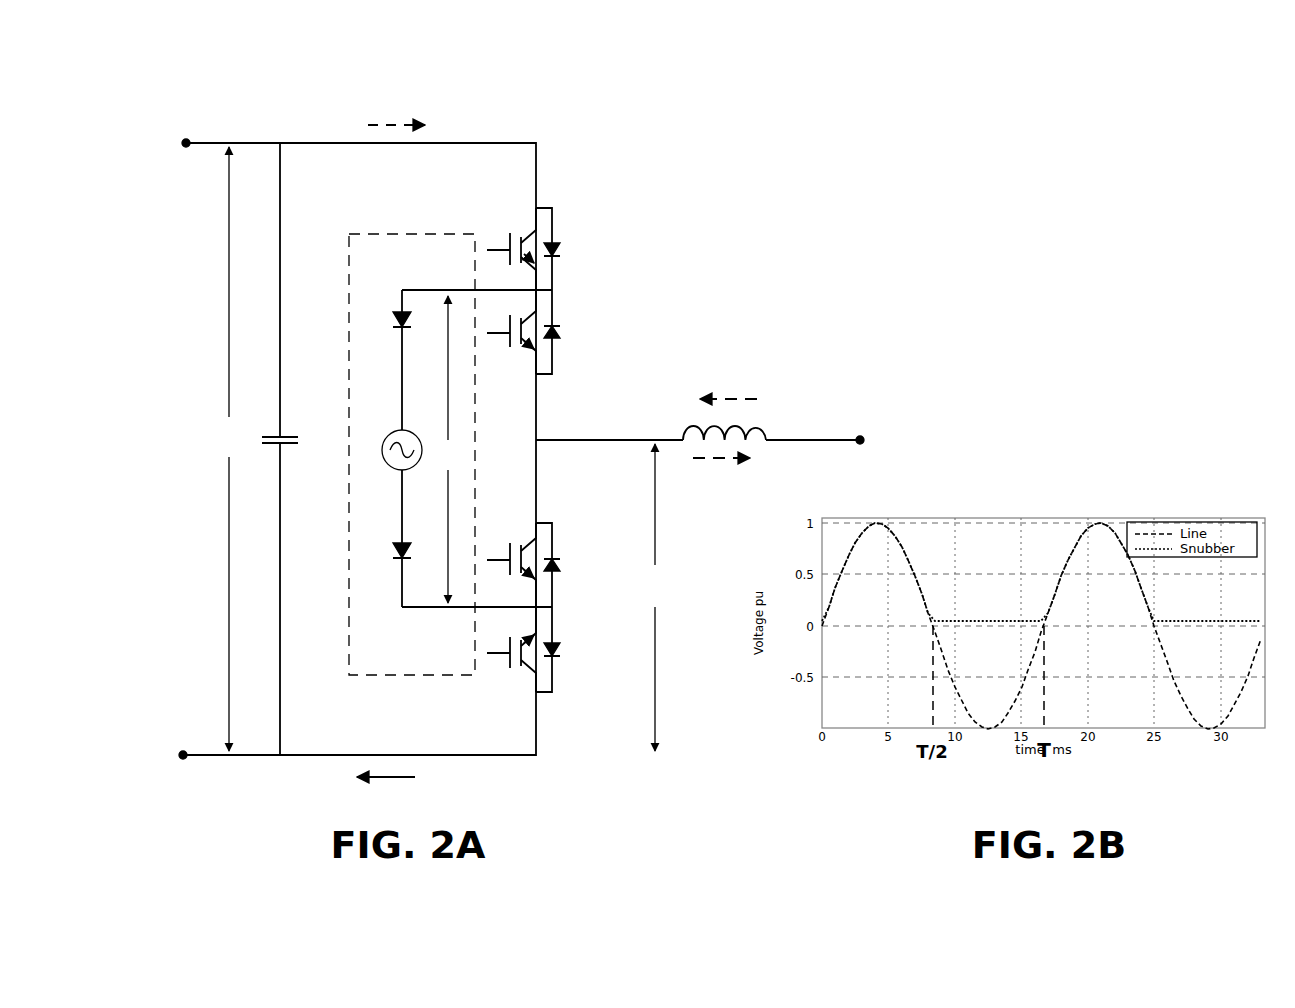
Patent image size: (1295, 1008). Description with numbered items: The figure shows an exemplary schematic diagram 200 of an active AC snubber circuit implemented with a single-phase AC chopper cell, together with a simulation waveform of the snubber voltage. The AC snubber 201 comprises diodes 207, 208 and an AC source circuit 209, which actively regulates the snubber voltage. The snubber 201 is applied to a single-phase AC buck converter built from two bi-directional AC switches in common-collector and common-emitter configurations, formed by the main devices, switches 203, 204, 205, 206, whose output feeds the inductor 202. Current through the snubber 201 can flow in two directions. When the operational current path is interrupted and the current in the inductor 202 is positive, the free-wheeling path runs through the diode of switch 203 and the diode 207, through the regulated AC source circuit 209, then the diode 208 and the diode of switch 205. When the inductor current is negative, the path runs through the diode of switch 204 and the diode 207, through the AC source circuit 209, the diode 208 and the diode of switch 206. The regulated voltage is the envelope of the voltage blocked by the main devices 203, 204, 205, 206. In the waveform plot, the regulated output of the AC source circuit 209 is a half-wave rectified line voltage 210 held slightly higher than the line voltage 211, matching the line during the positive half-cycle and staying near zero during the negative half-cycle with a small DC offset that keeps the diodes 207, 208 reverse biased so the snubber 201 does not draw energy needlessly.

In FIG. 2A, the schematic diagram 200 is at (210, 101).
In FIG. 2A, the AC snubber 201 is at (425, 454).
In FIG. 2A, the inductor 202 is at (752, 425).
In FIG. 2A, the switch 203 is at (557, 253).
In FIG. 2A, the switch 204 is at (557, 335).
In FIG. 2A, the switch 205 is at (557, 564).
In FIG. 2A, the switch 206 is at (557, 653).
In FIG. 2A, the diode 207 is at (394, 323).
In FIG. 2A, the diode 208 is at (394, 554).
In FIG. 2A, the AC source circuit 209 is at (382, 448).
In FIG. 2B, the half-wave rectified line voltage 210 is at (1000, 622).
In FIG. 2B, the line voltage 211 is at (1020, 680).